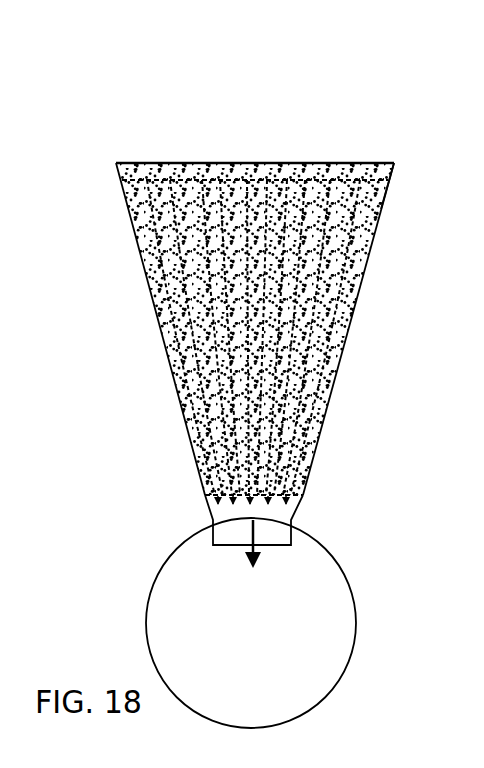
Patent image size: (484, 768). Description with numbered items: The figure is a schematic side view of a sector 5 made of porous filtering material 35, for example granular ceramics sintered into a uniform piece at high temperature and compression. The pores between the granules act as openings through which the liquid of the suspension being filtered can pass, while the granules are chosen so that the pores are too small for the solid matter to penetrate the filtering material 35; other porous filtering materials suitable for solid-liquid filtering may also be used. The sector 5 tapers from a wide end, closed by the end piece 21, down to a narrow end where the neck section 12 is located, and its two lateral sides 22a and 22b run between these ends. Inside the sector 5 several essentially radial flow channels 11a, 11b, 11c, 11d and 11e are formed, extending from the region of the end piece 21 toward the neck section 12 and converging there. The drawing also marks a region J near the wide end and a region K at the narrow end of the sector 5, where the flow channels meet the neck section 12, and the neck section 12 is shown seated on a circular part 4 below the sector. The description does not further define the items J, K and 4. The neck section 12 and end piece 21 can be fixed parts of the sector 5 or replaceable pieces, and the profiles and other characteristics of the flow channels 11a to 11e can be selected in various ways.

The sector 5 is at (180, 78).
The end piece 21 is at (232, 170).
The flow channel 11a is at (148, 178).
The flow channel 11b is at (203, 180).
The flow channel 11c is at (243, 180).
The flow channel 11d is at (303, 180).
The flow channel 11e is at (355, 178).
The zone J is at (383, 209).
The filtering material 35 is at (349, 288).
The side of the sector 22a is at (133, 330).
The side of the sector 22b is at (375, 332).
The zone K is at (305, 486).
The neck section 12 is at (233, 533).
The collector roll 4 is at (256, 642).